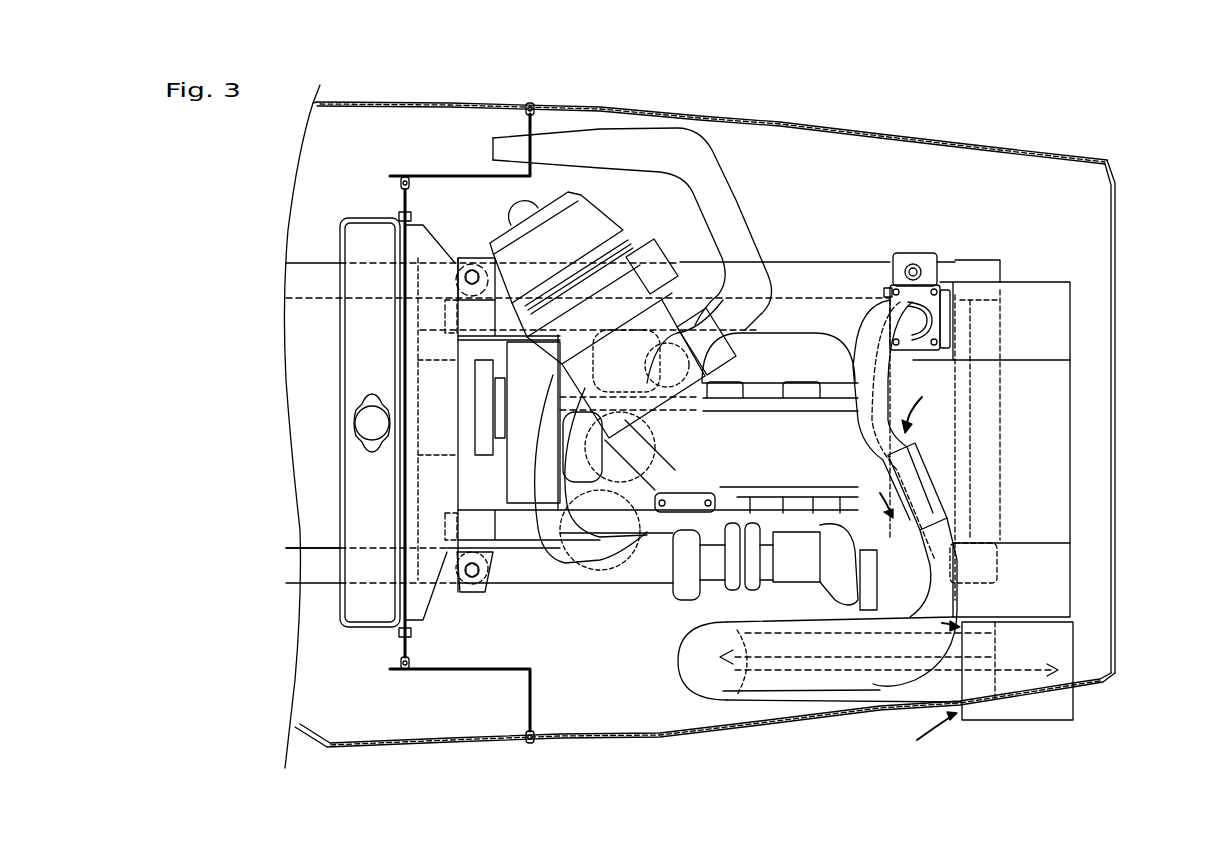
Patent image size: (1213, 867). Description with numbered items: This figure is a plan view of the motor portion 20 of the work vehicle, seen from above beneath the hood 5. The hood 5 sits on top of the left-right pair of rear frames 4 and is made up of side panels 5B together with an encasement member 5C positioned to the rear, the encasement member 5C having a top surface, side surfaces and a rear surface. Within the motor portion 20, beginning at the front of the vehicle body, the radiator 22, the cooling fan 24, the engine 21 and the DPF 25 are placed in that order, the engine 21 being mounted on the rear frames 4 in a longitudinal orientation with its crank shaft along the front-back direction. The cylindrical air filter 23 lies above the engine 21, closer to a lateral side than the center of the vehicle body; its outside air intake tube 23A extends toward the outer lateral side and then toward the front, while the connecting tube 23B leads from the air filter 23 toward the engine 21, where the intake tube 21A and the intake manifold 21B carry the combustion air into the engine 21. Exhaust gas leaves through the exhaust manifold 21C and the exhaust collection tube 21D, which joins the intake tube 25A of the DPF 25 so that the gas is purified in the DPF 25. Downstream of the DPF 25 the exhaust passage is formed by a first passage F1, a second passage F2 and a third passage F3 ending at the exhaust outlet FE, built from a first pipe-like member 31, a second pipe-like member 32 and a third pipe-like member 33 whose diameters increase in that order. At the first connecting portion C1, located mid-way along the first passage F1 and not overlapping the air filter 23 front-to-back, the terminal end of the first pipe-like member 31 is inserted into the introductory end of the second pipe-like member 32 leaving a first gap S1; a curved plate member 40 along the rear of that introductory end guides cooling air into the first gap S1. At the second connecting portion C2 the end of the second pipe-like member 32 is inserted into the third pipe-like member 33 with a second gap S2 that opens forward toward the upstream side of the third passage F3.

The rear frames 4 is at (874, 268).
The hood 5 is at (819, 121).
The side panels 5B is at (780, 122).
The encasement member 5C is at (1115, 208).
The motor portion 20 is at (945, 192).
The engine 21 is at (777, 330).
The intake tube 21A is at (707, 433).
The intake manifold 21B is at (805, 347).
The exhaust manifold 21C is at (815, 520).
The exhaust collection tube 21D is at (767, 513).
The radiator 22 is at (363, 218).
The air filter 23 is at (590, 222).
The outside air intake tube 23A is at (722, 193).
The connecting tube 23B is at (595, 568).
The cooling fan 24 is at (433, 267).
The DPF 25 is at (1030, 303).
The intake tube of the DPF 25A is at (997, 567).
The first pipe-like member 31 is at (860, 423).
The second pipe-like member 32 is at (678, 660).
The third pipe-like member 33 is at (1027, 720).
The plate member 40 is at (933, 480).
The first passage F1 is at (872, 367).
The second passage F2 is at (790, 655).
The third passage F3 is at (805, 673).
The exhaust outlet FE is at (1073, 665).
The first gap S1 is at (913, 430).
The second gap S2 is at (956, 627).
The first connecting portion C1 is at (957, 518).
The second connecting portion C2 is at (975, 727).